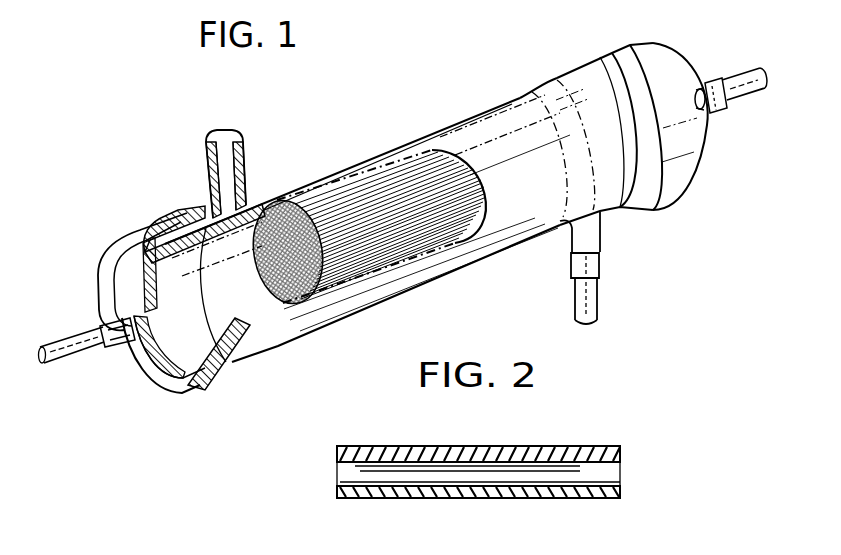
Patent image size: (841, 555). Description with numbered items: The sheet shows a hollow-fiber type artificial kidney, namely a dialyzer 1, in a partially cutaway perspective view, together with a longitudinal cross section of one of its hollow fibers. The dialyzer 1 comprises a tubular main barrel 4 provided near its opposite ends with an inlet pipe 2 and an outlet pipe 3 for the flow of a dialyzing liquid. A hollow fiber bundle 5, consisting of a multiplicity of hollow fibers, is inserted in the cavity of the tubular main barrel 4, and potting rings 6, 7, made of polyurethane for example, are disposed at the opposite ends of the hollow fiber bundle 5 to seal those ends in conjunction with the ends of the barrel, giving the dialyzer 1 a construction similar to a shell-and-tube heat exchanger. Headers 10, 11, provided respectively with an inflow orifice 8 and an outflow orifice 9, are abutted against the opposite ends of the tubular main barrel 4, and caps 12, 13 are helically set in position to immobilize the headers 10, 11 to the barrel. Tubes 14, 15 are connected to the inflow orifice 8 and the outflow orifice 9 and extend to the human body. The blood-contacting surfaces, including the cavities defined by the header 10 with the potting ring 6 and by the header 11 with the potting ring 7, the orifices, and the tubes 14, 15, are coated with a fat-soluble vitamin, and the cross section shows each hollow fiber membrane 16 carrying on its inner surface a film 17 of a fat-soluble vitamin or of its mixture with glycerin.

In FIG. 1, the dialyzer 1 is at (488, 100).
In FIG. 1, the inlet pipe 2 is at (598, 236).
In FIG. 1, the outlet pipe 3 is at (242, 148).
In FIG. 1, the tubular main barrel 4 is at (512, 215).
In FIG. 1, the hollow fiber bundle 5 is at (390, 235).
In FIG. 1, the potting ring 6 is at (165, 216).
In FIG. 1, the potting ring 7 is at (568, 100).
In FIG. 1, the inflow orifice 8 is at (116, 341).
In FIG. 1, the outflow orifice 9 is at (708, 110).
In FIG. 1, the header 10 is at (152, 378).
In FIG. 1, the header 11 is at (701, 74).
In FIG. 1, the cap 12 is at (112, 242).
In FIG. 1, the cap 13 is at (690, 150).
In FIG. 1, the tube 14 is at (52, 352).
In FIG. 1, the tube 15 is at (732, 80).
In FIG. 2, the hollow fiber membrane 16 is at (396, 444).
In FIG. 2, the film of a fat-soluble vitamin 17 is at (540, 448).